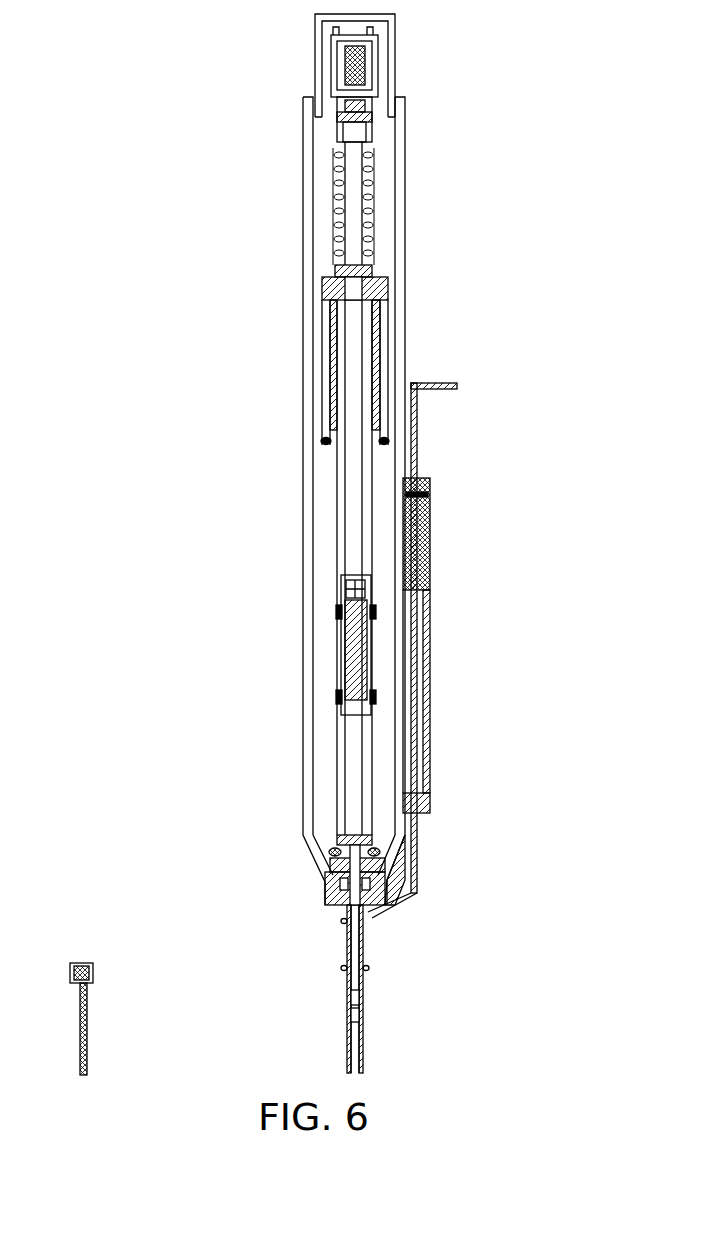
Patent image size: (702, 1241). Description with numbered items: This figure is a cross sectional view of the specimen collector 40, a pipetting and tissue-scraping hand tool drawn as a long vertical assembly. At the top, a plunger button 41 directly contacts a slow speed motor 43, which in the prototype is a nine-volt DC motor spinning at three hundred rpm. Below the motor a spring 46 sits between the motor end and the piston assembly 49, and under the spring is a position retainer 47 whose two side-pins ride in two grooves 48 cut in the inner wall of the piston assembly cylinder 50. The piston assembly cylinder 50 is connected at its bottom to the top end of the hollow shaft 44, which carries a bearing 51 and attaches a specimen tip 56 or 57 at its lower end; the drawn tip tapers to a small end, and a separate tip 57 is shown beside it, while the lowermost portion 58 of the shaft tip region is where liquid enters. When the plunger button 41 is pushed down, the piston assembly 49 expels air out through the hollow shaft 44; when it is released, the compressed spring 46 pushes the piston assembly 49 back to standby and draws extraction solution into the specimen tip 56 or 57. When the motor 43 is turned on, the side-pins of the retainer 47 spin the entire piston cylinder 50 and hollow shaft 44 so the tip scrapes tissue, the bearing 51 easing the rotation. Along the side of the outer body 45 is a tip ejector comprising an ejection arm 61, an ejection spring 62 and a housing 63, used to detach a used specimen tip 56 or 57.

The specimen collector 40 is at (148, 382).
The plunger button 41 is at (318, 42).
The slow speed motor 43 is at (357, 58).
The hollow shaft 44 is at (368, 933).
The outer housing 45 is at (305, 220).
The spring 46 is at (340, 165).
The position retainer 47 is at (338, 290).
The grooves 48 is at (380, 338).
The piston assembly 49 is at (360, 663).
The piston assembly cylinder 50 is at (330, 512).
The bearing 51 is at (332, 890).
The specimen tip 56 is at (367, 987).
The specimen tip 57 is at (62, 1006).
The needle tip 58 is at (347, 1045).
The ejection arm 61 is at (428, 643).
The ejection spring 62 is at (430, 527).
The housing 63 is at (432, 600).